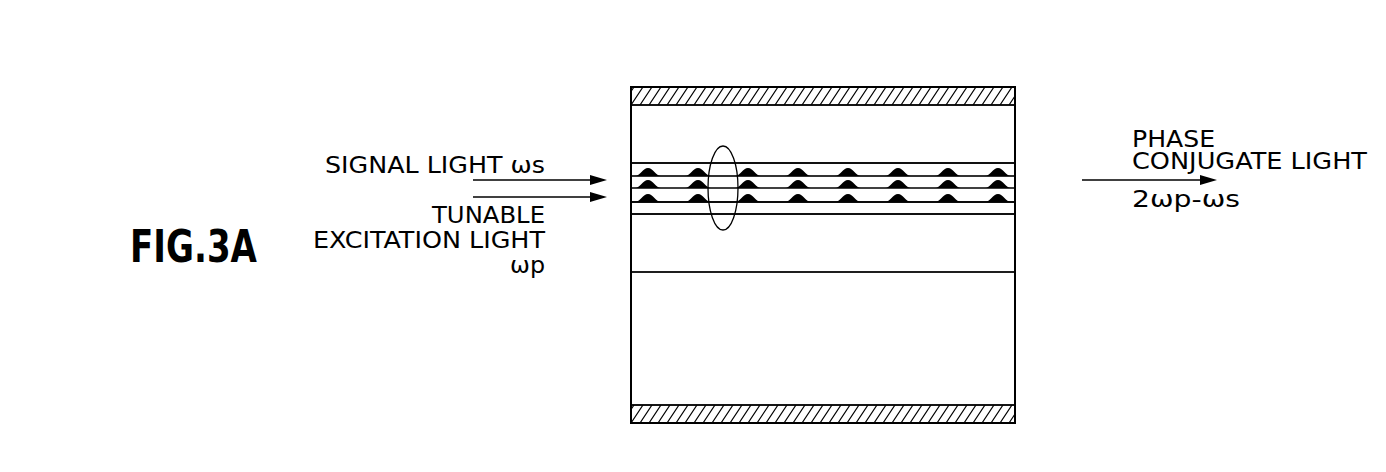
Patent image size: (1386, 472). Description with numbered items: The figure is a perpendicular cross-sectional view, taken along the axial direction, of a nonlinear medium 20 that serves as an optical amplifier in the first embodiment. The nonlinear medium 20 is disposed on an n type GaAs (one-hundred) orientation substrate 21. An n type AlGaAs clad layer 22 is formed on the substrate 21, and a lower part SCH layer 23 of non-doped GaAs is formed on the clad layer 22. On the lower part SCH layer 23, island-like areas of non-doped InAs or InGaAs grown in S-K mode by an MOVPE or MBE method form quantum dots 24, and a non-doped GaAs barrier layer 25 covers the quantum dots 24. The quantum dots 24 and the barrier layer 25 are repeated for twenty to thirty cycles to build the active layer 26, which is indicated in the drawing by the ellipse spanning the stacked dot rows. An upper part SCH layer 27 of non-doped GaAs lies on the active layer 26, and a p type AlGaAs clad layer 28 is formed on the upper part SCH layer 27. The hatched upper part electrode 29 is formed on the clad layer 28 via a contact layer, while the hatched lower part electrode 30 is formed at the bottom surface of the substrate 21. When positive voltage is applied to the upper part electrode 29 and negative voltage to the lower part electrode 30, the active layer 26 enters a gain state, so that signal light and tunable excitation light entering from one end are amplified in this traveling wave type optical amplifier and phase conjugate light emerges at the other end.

The nonlinear medium 20 is at (829, 42).
The substrate 21 is at (1008, 345).
The clad layer 22 is at (1008, 243).
The lower part SCH layer 23 is at (1010, 205).
The quantum dot 24 is at (950, 170).
The barrier layer 25 is at (1010, 195).
The active layer 26 is at (723, 146).
The upper part SCH layer 27 is at (982, 168).
The clad layer 28 is at (636, 133).
The upper part electrode 29 is at (631, 92).
The lower part electrode 30 is at (1015, 413).